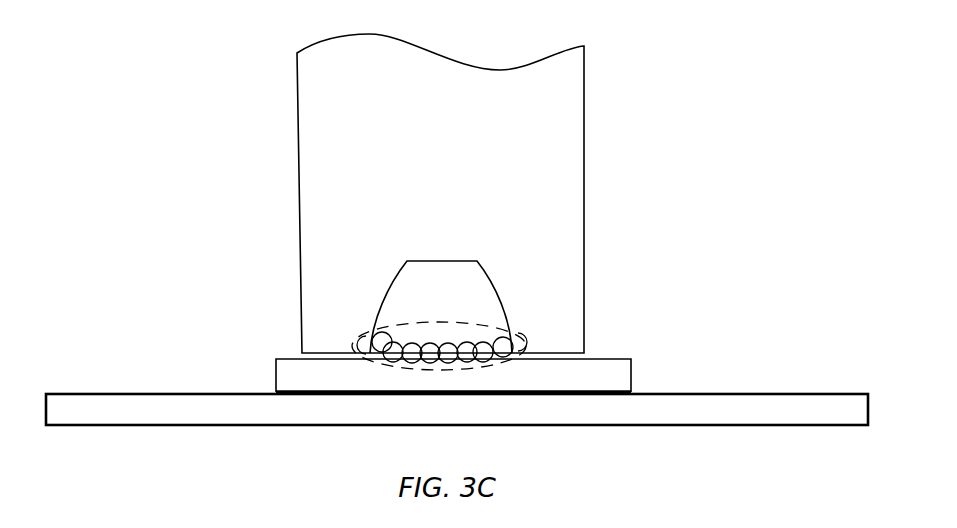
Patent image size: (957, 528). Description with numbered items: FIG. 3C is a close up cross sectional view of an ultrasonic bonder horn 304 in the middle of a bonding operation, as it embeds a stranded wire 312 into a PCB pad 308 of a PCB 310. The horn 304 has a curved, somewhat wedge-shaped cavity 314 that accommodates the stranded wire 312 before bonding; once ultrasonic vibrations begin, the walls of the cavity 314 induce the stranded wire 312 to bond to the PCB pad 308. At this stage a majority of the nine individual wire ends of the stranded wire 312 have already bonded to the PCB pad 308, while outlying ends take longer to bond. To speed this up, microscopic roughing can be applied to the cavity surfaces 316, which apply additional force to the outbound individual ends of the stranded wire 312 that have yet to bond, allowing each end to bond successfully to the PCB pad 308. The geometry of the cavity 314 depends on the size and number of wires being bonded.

The ultrasonic bonder horn 304 is at (352, 176).
The PCB pad 308 is at (563, 383).
The PCB 310 is at (800, 419).
The stranded wire 312 is at (470, 323).
The cavity 314 is at (406, 261).
The cavity surfaces 316 is at (522, 334).